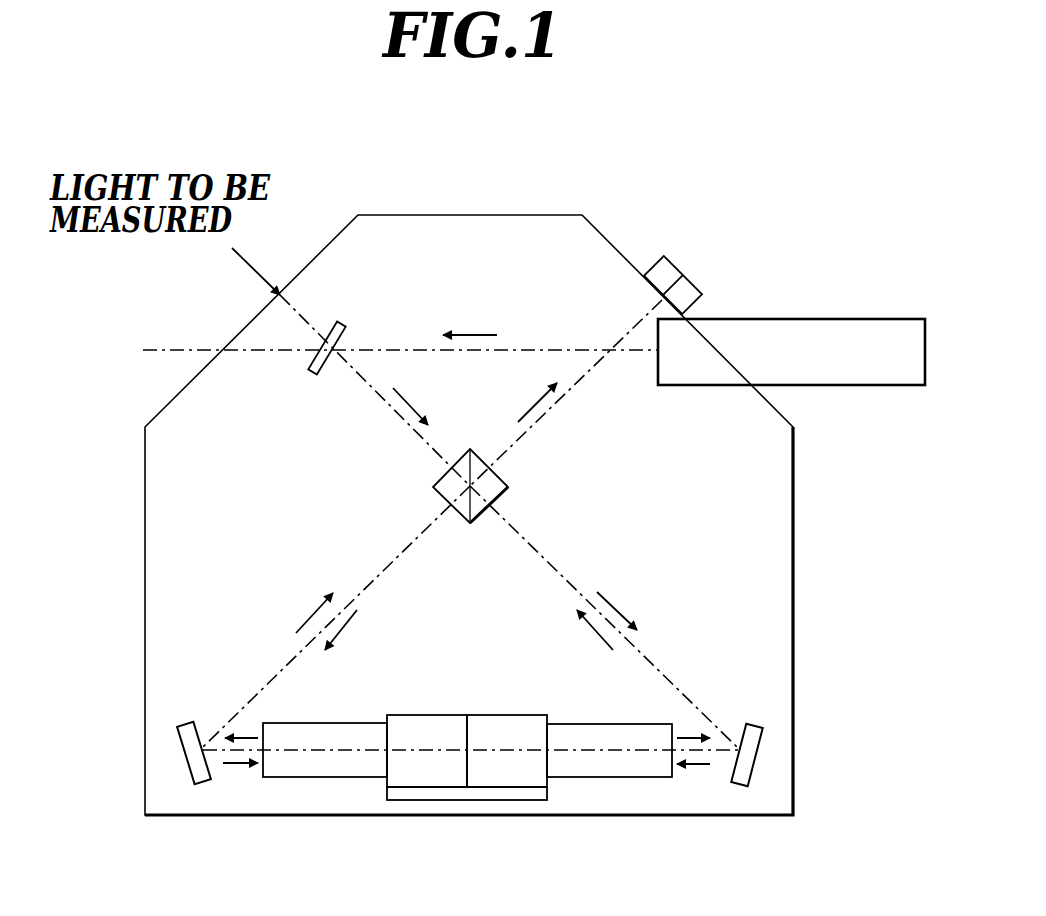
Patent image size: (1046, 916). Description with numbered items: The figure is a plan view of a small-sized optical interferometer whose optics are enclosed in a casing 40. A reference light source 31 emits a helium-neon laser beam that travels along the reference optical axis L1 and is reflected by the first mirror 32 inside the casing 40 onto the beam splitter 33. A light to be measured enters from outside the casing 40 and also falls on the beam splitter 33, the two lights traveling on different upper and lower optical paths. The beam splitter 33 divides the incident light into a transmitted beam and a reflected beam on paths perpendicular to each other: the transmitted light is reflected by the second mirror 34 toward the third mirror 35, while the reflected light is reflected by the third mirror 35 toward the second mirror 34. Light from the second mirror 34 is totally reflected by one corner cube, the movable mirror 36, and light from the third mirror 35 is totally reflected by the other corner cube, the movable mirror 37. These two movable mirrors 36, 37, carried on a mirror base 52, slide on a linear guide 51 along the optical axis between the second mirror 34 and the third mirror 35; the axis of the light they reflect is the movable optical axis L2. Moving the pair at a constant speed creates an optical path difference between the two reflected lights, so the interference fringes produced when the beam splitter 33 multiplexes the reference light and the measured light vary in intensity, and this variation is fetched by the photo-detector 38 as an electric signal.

The reference light source 31 is at (803, 319).
The first mirror 32 is at (344, 320).
The beam splitter 33 is at (433, 478).
The second mirror 34 is at (755, 724).
The third mirror 35 is at (188, 722).
The movable mirror 36 is at (508, 715).
The movable mirror 37 is at (428, 715).
The photo-detector 38 is at (675, 256).
The casing 40 is at (470, 215).
The linear guide 51 is at (609, 768).
The mirror base 52 is at (468, 800).
The reference optical axis L1 is at (183, 348).
The movable optical axis L2 is at (326, 750).